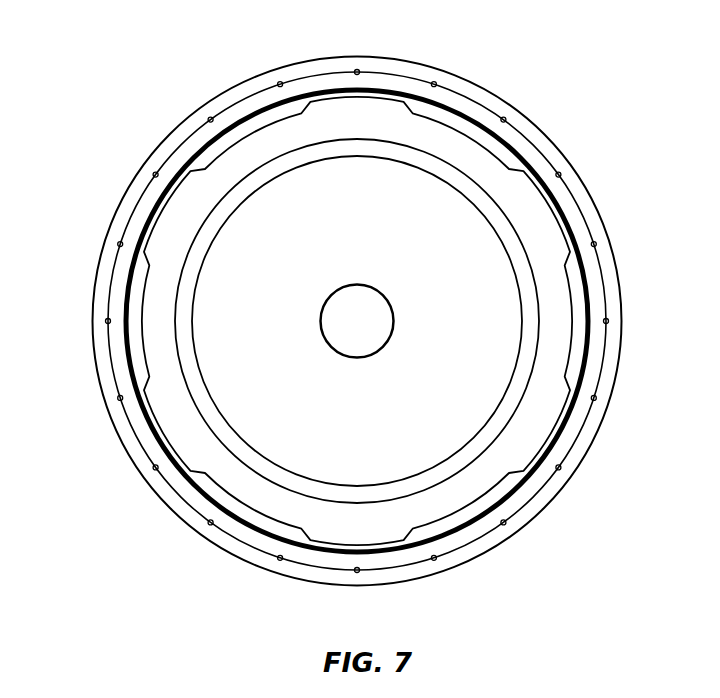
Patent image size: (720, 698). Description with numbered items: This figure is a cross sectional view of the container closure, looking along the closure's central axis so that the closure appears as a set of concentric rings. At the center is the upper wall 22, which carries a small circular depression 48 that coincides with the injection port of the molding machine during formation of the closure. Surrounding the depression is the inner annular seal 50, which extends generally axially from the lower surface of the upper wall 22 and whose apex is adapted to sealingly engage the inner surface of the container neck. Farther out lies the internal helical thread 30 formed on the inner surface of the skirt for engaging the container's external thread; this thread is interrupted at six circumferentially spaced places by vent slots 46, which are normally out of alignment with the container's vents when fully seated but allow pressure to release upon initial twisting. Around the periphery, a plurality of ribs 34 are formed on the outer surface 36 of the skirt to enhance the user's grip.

The upper wall 22 is at (441, 226).
The internal helical thread 30 is at (265, 112).
The ribs 34 is at (207, 118).
The outer surface 36 is at (357, 321).
The vent slots 46 is at (372, 100).
The depression 48 is at (373, 307).
The inner annular seal 50 is at (440, 470).